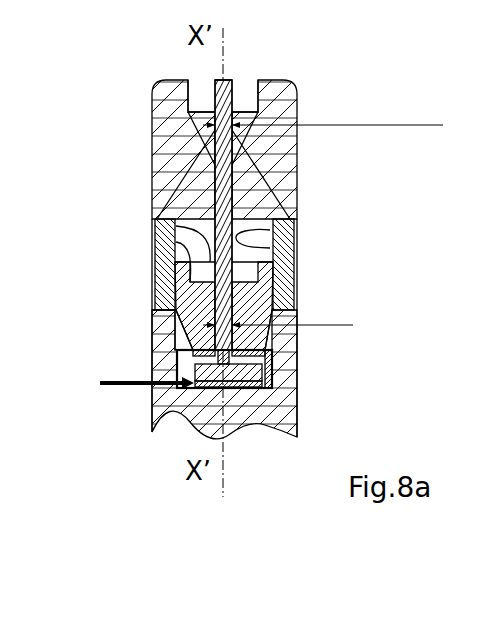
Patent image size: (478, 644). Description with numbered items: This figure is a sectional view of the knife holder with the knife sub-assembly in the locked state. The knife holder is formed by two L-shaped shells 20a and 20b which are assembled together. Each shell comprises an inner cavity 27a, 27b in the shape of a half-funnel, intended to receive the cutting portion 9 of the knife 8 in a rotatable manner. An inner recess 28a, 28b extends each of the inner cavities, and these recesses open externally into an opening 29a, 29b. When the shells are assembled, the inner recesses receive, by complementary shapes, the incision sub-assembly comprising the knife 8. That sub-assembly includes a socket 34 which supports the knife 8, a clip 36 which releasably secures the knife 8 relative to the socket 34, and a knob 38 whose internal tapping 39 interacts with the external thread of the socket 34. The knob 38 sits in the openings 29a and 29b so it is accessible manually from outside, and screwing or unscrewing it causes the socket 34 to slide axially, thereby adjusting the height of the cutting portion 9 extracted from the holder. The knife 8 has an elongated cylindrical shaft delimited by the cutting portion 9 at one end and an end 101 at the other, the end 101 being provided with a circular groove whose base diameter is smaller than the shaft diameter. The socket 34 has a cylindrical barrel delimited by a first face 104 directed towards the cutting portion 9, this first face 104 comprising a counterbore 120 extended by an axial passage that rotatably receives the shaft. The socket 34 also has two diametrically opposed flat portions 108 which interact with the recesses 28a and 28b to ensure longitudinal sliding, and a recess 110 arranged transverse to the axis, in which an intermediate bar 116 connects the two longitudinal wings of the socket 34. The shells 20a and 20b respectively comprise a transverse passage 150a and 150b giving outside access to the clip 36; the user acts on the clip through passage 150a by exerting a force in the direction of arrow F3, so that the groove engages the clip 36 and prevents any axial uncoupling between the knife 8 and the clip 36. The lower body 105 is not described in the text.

The knife 8 is at (213, 167).
The cutting portion 9 is at (233, 80).
The shell 20a is at (150, 92).
The shell 20b is at (298, 92).
The inner cavity 27a is at (206, 118).
The inner cavity 27b is at (256, 118).
The opening 29a is at (158, 212).
The opening 29b is at (292, 212).
The socket 34 is at (152, 294).
The clip 36 is at (273, 367).
The knob 38 is at (296, 279).
The internal tapping 39 is at (294, 228).
The end 101 is at (197, 371).
The first face 104 is at (160, 230).
The lower body 105 is at (195, 428).
The flat portions 108 is at (150, 335).
The recess 110 is at (258, 390).
The intermediate bar 116 is at (233, 388).
The counterbore 120 is at (160, 240).
The transverse passage 150a is at (177, 390).
The transverse passage 150b is at (287, 374).
The inner recess 28a is at (185, 319).
The inner recess 28b is at (294, 263).
The force direction arrow F3 is at (138, 377).